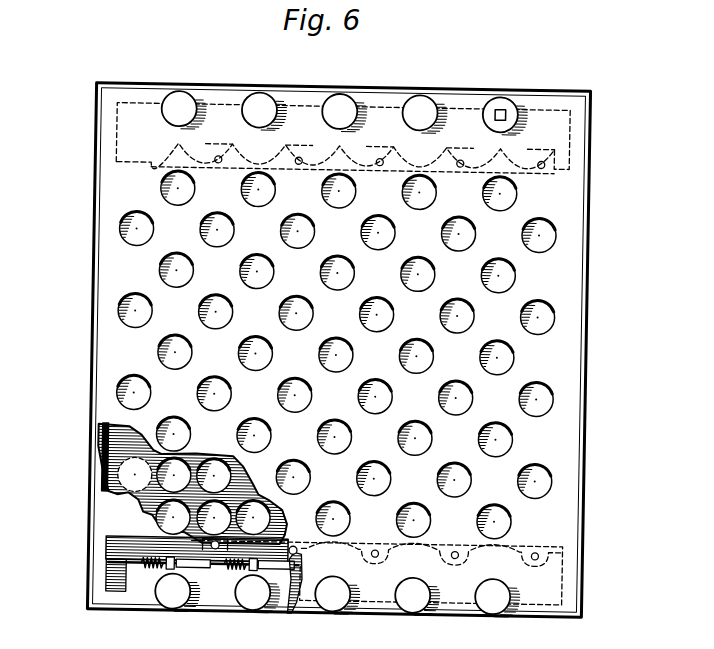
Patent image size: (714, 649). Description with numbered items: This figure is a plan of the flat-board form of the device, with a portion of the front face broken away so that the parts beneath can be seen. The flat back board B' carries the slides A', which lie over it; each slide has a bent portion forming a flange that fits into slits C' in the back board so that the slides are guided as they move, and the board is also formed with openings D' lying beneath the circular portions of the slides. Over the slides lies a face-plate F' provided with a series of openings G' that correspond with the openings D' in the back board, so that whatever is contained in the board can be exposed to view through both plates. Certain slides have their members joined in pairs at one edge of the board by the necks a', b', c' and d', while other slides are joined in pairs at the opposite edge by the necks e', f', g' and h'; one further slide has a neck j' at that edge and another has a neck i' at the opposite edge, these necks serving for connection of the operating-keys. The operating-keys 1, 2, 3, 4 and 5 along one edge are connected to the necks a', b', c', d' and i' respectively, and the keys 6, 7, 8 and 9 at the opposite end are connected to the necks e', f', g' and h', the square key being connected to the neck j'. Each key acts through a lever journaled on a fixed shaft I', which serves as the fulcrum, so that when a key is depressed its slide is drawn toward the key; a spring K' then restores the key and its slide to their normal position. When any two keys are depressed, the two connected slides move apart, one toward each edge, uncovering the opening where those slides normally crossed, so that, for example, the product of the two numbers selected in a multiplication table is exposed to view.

The openings D' is at (174, 483).
The slides A' is at (100, 474).
The slits C' is at (83, 491).
The back board B' is at (168, 550).
The fixed shaft I' is at (90, 580).
The spring K' is at (185, 597).
The neck a' is at (215, 532).
The neck b' is at (300, 564).
The neck c' is at (378, 538).
The neck d' is at (456, 538).
The neck e' is at (234, 149).
The neck f' is at (320, 152).
The neck g' is at (400, 155).
The neck h' is at (480, 159).
The neck i' is at (538, 541).
The neck j' is at (549, 151).
The face-plate F' is at (335, 355).
The openings G' is at (572, 395).
The operating-key 1 is at (177, 592).
The operating-key 2 is at (257, 594).
The operating-key 3 is at (337, 595).
The operating-key 4 is at (417, 597).
The operating-key 5 is at (497, 598).
The operating-key 6 is at (183, 110).
The operating-key 7 is at (264, 111).
The operating-key 8 is at (344, 113).
The operating-key 9 is at (424, 114).